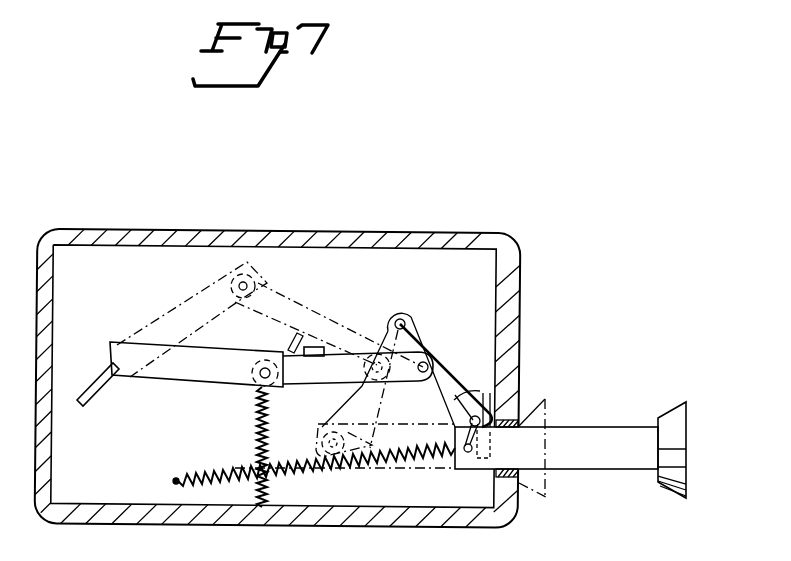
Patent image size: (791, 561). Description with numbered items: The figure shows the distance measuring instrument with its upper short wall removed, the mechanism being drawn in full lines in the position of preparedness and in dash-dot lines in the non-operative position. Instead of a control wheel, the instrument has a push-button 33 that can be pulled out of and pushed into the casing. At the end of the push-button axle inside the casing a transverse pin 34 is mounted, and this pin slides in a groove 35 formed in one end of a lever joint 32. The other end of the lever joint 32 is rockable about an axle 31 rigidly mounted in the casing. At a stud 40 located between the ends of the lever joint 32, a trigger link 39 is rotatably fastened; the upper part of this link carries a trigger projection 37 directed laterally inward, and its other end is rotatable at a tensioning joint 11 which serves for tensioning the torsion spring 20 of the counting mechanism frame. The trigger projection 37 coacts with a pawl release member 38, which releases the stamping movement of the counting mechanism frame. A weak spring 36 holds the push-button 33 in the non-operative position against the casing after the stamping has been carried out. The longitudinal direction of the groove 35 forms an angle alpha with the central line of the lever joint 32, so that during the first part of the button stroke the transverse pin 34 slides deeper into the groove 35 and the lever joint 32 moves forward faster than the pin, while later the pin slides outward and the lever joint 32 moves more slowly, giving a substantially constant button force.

The tensioning joint 11 is at (135, 348).
The torsion spring 20 is at (96, 392).
The axle 31 is at (405, 320).
The lever joint 32 is at (452, 371).
The push-button 33 is at (567, 427).
The transverse pin 34 is at (467, 452).
The groove 35 is at (500, 412).
The weak spring 36 is at (390, 460).
The trigger projection 37 is at (317, 347).
The pawl release member 38 is at (289, 353).
The trigger link 39 is at (308, 376).
The stud 40 is at (428, 364).